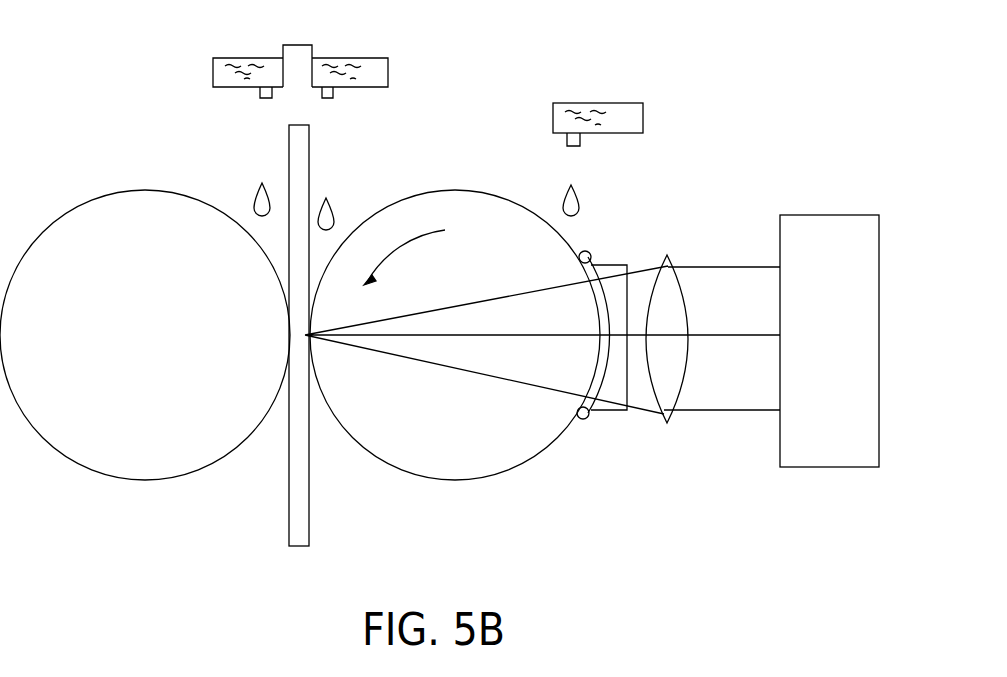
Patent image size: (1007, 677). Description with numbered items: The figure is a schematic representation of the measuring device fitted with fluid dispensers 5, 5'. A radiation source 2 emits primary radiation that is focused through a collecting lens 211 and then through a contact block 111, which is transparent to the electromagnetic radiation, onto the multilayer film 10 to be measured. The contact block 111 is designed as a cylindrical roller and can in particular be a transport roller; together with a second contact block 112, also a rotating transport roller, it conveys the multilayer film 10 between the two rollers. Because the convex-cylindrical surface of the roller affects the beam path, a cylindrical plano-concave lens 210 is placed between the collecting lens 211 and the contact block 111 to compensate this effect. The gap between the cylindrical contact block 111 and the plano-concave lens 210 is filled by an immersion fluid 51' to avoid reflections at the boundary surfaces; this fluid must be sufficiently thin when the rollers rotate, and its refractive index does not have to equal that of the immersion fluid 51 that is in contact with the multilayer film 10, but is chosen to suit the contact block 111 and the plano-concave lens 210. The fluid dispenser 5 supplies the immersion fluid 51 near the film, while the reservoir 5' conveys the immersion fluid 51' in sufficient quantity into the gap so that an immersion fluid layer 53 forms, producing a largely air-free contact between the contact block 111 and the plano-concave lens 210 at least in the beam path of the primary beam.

The radiation source 2 is at (830, 228).
The fluid dispenser 5 is at (316, 68).
The fluid dispenser 5' is at (625, 104).
The multilayer film 10 is at (303, 153).
The immersion fluid 51 is at (313, 193).
The immersion fluid 51' is at (549, 183).
The immersion fluid layer 53 is at (586, 252).
The contact block 111 is at (500, 478).
The contact block 112 is at (128, 481).
The cylindrical plano-concave lens 210 is at (612, 262).
The collecting lens 211 is at (667, 288).